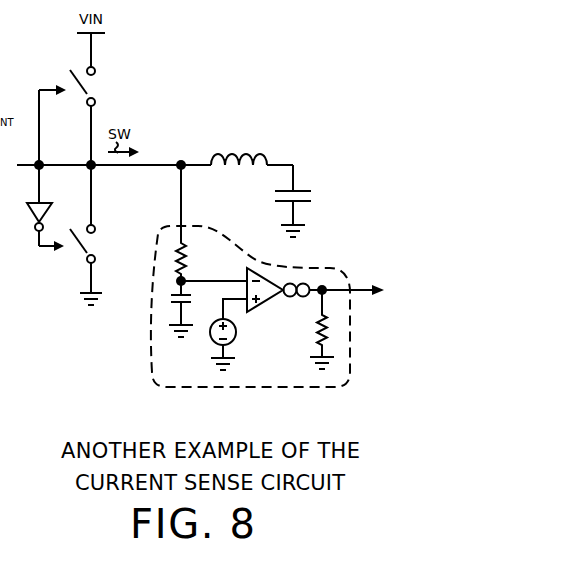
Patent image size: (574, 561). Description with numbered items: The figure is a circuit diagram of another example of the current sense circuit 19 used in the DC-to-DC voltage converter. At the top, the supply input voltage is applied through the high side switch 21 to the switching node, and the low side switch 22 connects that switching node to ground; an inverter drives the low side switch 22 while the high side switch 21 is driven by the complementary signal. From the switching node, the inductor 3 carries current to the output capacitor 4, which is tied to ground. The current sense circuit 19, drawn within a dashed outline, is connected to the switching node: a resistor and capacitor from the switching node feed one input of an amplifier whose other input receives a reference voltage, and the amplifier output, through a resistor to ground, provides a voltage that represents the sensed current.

The high side switch HSS 21 is at (104, 116).
The low side switch LSS 22 is at (102, 235).
The inductor 3 is at (229, 170).
The output capacitor 4 is at (272, 200).
The current sense circuit 19 is at (150, 361).